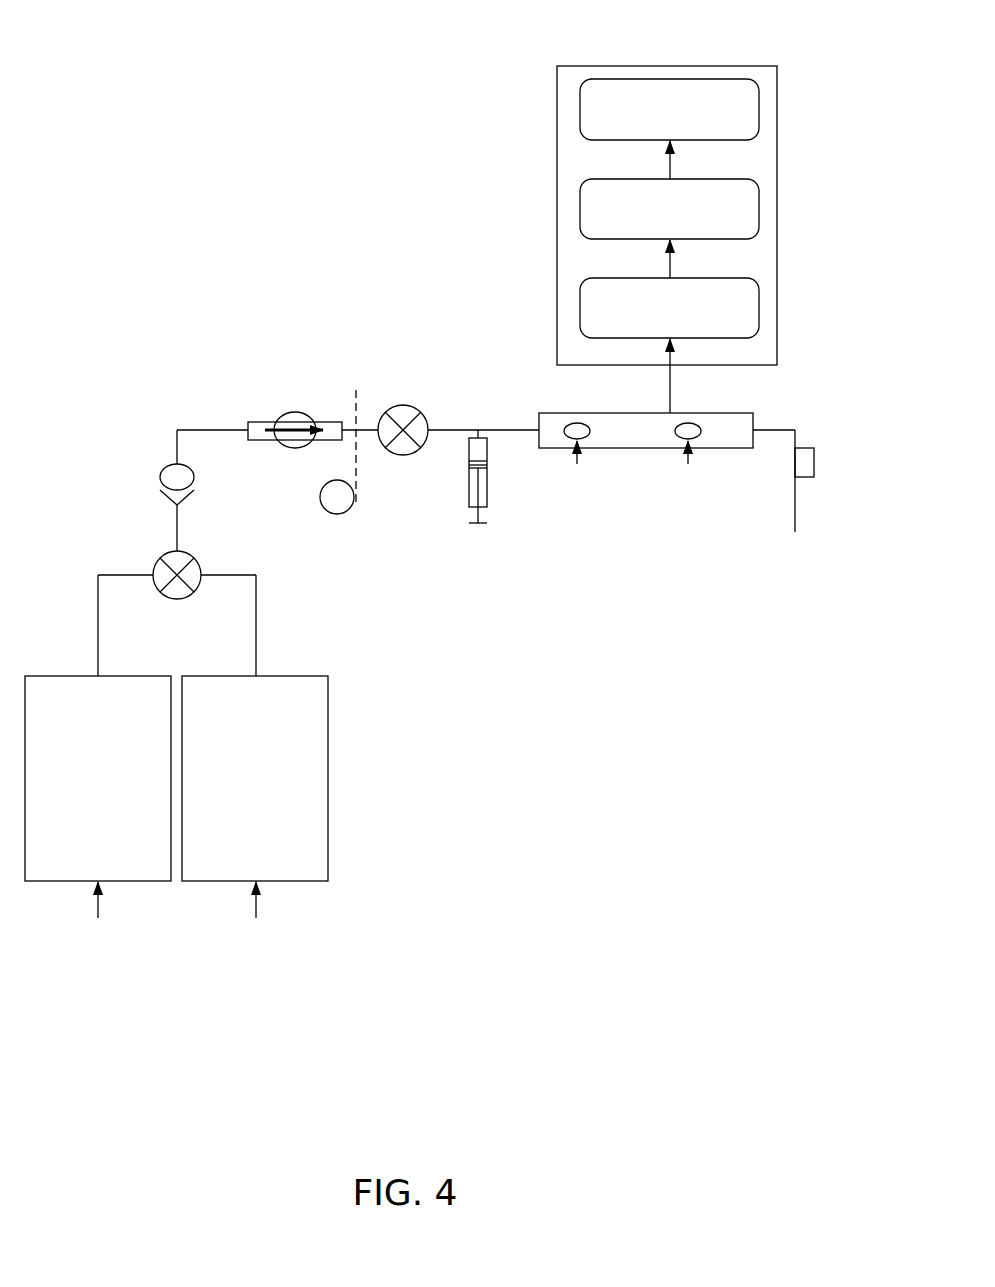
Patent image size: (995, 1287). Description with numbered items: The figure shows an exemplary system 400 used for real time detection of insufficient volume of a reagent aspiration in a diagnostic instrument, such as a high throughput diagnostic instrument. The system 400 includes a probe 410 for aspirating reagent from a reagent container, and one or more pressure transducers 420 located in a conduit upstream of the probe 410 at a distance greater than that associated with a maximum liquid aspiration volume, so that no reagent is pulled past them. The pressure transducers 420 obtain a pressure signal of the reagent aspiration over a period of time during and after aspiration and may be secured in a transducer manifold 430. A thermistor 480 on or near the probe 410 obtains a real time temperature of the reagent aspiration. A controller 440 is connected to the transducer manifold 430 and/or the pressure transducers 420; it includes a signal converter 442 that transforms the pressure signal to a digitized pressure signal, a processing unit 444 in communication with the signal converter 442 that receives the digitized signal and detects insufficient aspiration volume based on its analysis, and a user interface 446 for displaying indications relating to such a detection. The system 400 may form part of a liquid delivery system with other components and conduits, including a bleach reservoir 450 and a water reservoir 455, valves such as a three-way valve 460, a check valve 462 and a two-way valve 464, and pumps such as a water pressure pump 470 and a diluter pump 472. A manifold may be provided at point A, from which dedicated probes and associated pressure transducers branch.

The system 400 is at (199, 89).
The probe 410 is at (793, 495).
The pressure transducers 420 is at (582, 497).
The transducer manifold 430 is at (545, 412).
The controller 440 is at (626, 225).
The signal converter 442 is at (579, 308).
The processing unit 444 is at (579, 208).
The user interface 446 is at (579, 110).
The bleach reservoir 450 is at (142, 881).
The water reservoir 455 is at (328, 778).
The three-way valve 460 is at (155, 567).
The check valve 462 is at (153, 472).
The two-way valve 464 is at (400, 400).
The water pressure pump 470 is at (282, 410).
The diluter pump 472 is at (489, 509).
The thermistor 480 is at (808, 446).